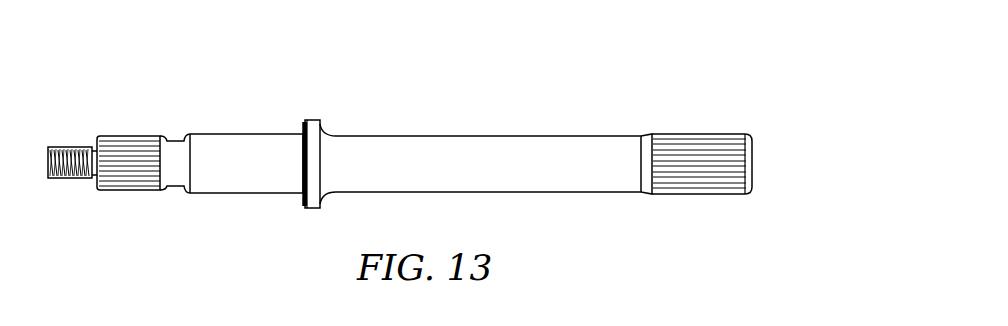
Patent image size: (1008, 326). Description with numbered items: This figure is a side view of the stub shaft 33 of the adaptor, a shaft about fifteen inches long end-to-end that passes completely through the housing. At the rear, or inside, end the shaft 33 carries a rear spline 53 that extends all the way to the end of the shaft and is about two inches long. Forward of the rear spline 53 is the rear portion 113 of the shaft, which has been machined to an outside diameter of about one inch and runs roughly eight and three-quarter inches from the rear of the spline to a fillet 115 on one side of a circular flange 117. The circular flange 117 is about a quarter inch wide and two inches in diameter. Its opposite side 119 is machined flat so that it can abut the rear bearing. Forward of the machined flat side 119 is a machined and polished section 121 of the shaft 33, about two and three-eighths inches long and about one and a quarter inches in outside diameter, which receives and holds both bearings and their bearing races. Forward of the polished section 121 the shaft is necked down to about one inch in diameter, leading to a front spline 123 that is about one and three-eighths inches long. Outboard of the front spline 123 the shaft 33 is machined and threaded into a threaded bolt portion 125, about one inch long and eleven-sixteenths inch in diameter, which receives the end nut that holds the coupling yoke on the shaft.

The stub shaft 33 is at (572, 39).
The rear spline 53 is at (693, 145).
The rear portion 113 is at (527, 148).
The fillet 115 is at (333, 133).
The circular flange 117 is at (313, 121).
The machined flat side 119 is at (304, 194).
The polished section 121 is at (245, 143).
The front spline 123 is at (130, 148).
The threaded bolt portion 125 is at (72, 147).